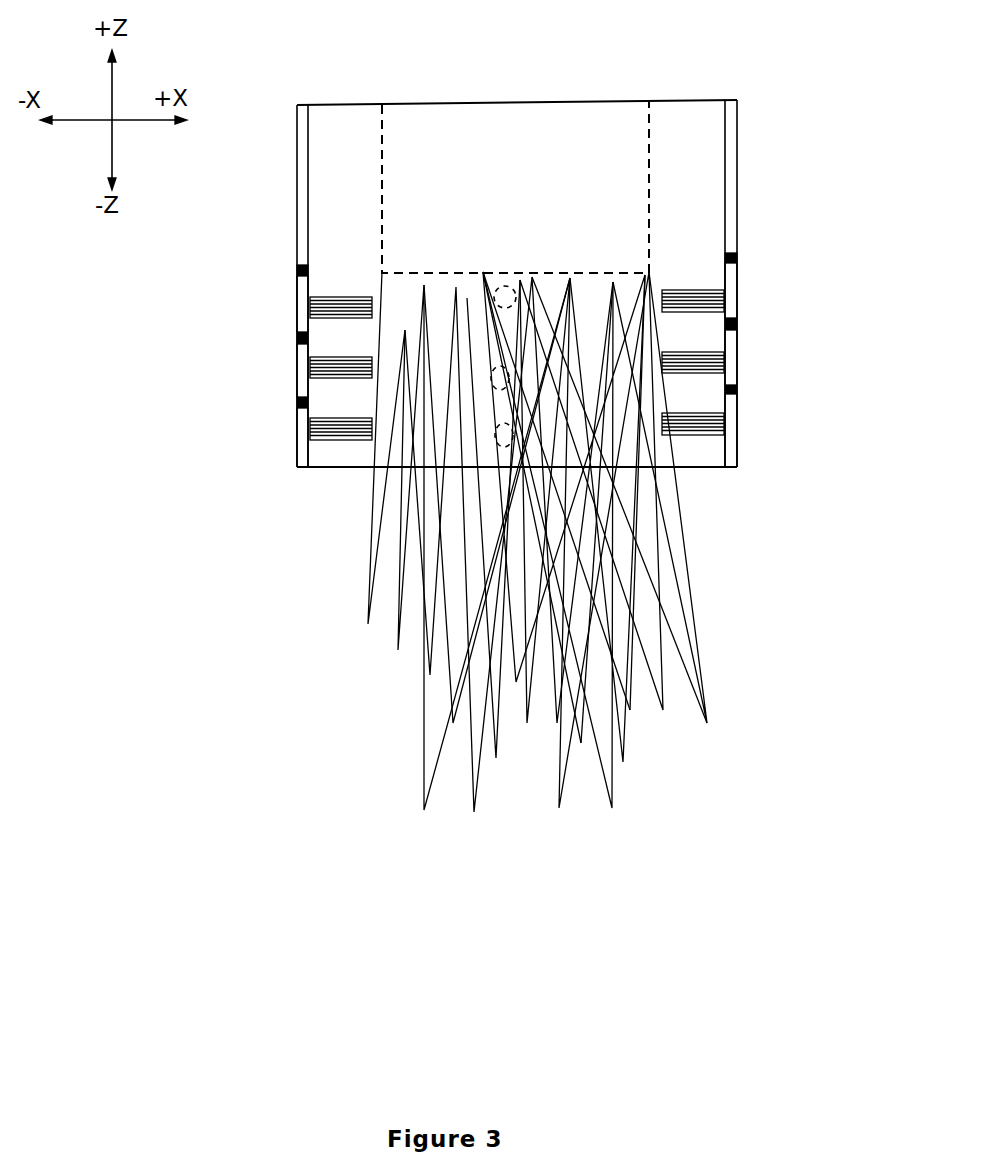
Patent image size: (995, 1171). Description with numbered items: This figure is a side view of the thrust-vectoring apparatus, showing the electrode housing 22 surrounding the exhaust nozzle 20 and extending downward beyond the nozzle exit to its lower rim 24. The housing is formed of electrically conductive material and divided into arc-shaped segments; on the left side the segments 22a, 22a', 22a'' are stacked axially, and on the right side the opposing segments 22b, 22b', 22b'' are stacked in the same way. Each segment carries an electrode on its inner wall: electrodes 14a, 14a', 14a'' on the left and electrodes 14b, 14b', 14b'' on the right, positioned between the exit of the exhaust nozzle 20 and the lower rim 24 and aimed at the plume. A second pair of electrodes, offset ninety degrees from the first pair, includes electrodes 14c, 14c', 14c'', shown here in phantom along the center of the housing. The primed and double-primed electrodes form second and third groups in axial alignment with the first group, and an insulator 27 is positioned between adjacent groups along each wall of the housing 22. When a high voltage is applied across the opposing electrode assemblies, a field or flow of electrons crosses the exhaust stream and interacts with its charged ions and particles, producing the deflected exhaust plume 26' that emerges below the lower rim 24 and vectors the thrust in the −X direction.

The exhaust nozzle 20 is at (413, 283).
The electrode housing 22 is at (737, 188).
The arc-shaped segment 22a is at (198, 437).
The arc-shaped segment 22a' is at (196, 367).
The arc-shaped segment 22a'' is at (208, 304).
The arc-shaped segment 22b is at (777, 430).
The arc-shaped segment 22b' is at (766, 357).
The arc-shaped segment 22b'' is at (806, 290).
The lower rim 24 is at (700, 468).
The deflected exhaust plume 26' is at (569, 542).
The insulator 27 is at (298, 270).
The electrode 14a is at (297, 445).
The electrode 14a' is at (291, 372).
The electrode 14a'' is at (292, 292).
The electrode 14b is at (734, 404).
The electrode 14b' is at (729, 338).
The electrode 14b'' is at (736, 279).
The electrode 14c is at (370, 462).
The electrode 14c' is at (644, 272).
The electrode 14c'' is at (349, 382).